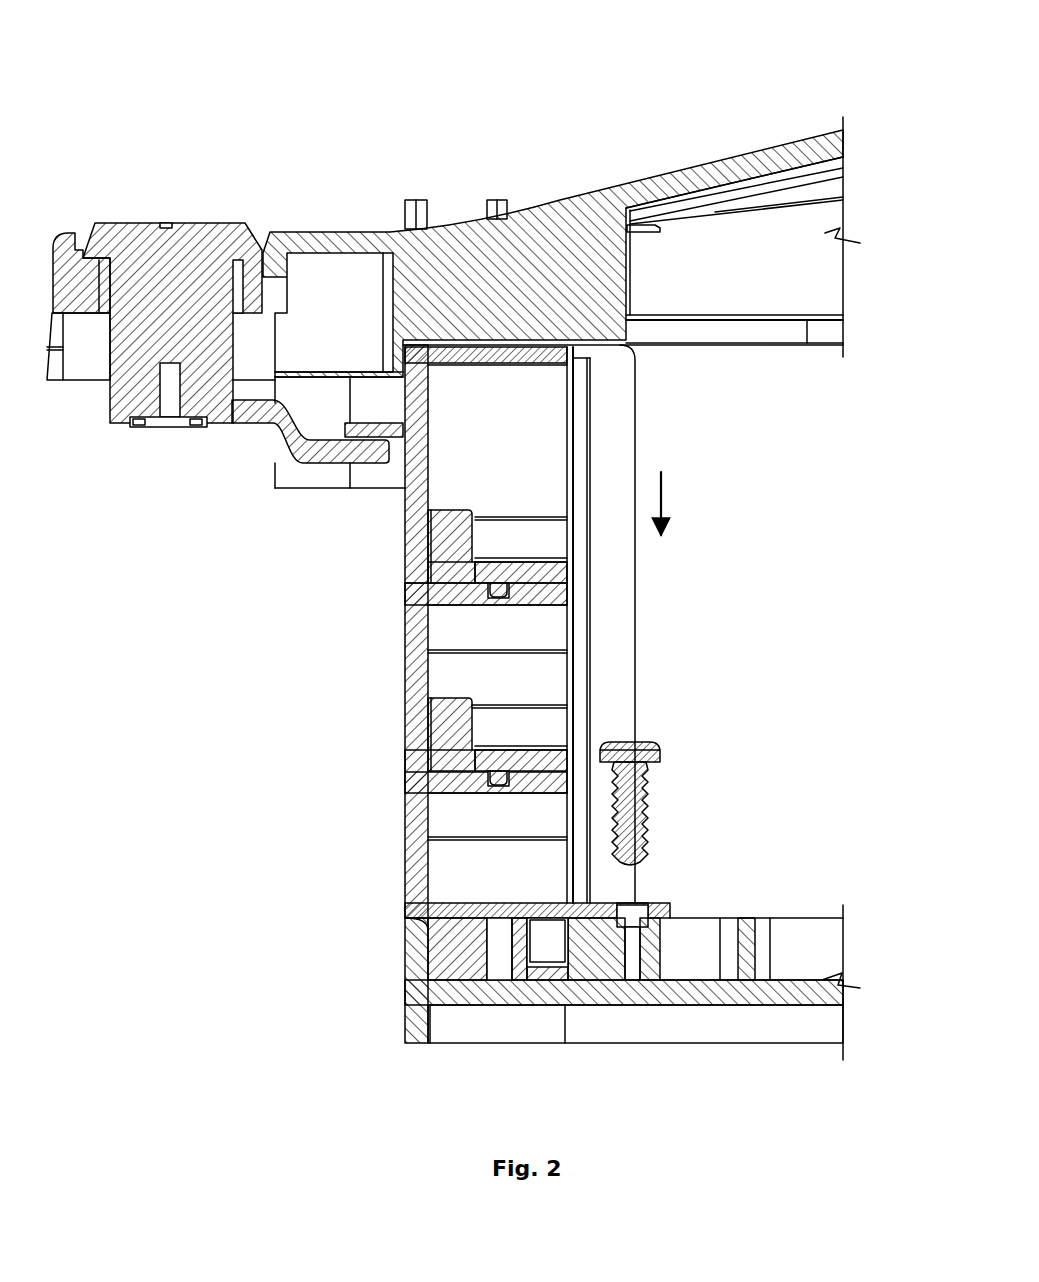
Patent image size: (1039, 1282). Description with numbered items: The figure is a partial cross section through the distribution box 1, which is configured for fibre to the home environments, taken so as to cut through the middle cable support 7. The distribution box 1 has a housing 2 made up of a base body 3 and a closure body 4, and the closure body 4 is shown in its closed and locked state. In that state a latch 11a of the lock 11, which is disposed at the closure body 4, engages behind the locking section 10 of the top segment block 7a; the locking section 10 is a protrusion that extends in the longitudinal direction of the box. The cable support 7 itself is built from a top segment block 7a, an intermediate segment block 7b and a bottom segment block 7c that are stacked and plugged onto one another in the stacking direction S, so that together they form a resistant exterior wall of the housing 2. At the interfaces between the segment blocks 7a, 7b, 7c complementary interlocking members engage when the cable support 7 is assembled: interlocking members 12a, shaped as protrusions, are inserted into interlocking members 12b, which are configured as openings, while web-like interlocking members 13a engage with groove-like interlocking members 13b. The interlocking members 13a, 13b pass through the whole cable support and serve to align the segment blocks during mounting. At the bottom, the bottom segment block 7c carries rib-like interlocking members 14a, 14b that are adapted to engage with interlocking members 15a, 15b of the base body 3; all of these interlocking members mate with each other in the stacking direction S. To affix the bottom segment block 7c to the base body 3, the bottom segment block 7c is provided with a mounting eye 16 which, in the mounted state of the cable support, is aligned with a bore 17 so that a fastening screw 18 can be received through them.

The distribution box 1 is at (93, 40).
The housing 2 is at (748, 142).
The base body 3 is at (700, 1007).
The closure body 4 is at (700, 165).
The cable support 7 is at (385, 650).
The top segment block 7a is at (400, 527).
The intermediate segment block 7b is at (400, 688).
The bottom segment block 7c is at (400, 833).
The locking section 10 is at (375, 418).
The lock 11 is at (105, 398).
The latch 11a is at (305, 458).
The interlocking member 12a is at (455, 518).
The interlocking member 12b is at (428, 573).
The interlocking member 13a is at (498, 585).
The interlocking member 13b is at (500, 597).
The interlocking member 14a is at (430, 955).
The interlocking member 14b is at (543, 965).
The interlocking member 15a is at (420, 990).
The interlocking member 15b is at (500, 958).
The mounting eye 16 is at (625, 895).
The bore 17 is at (632, 950).
The fastening screw 18 is at (662, 752).
The stacking direction S is at (661, 505).